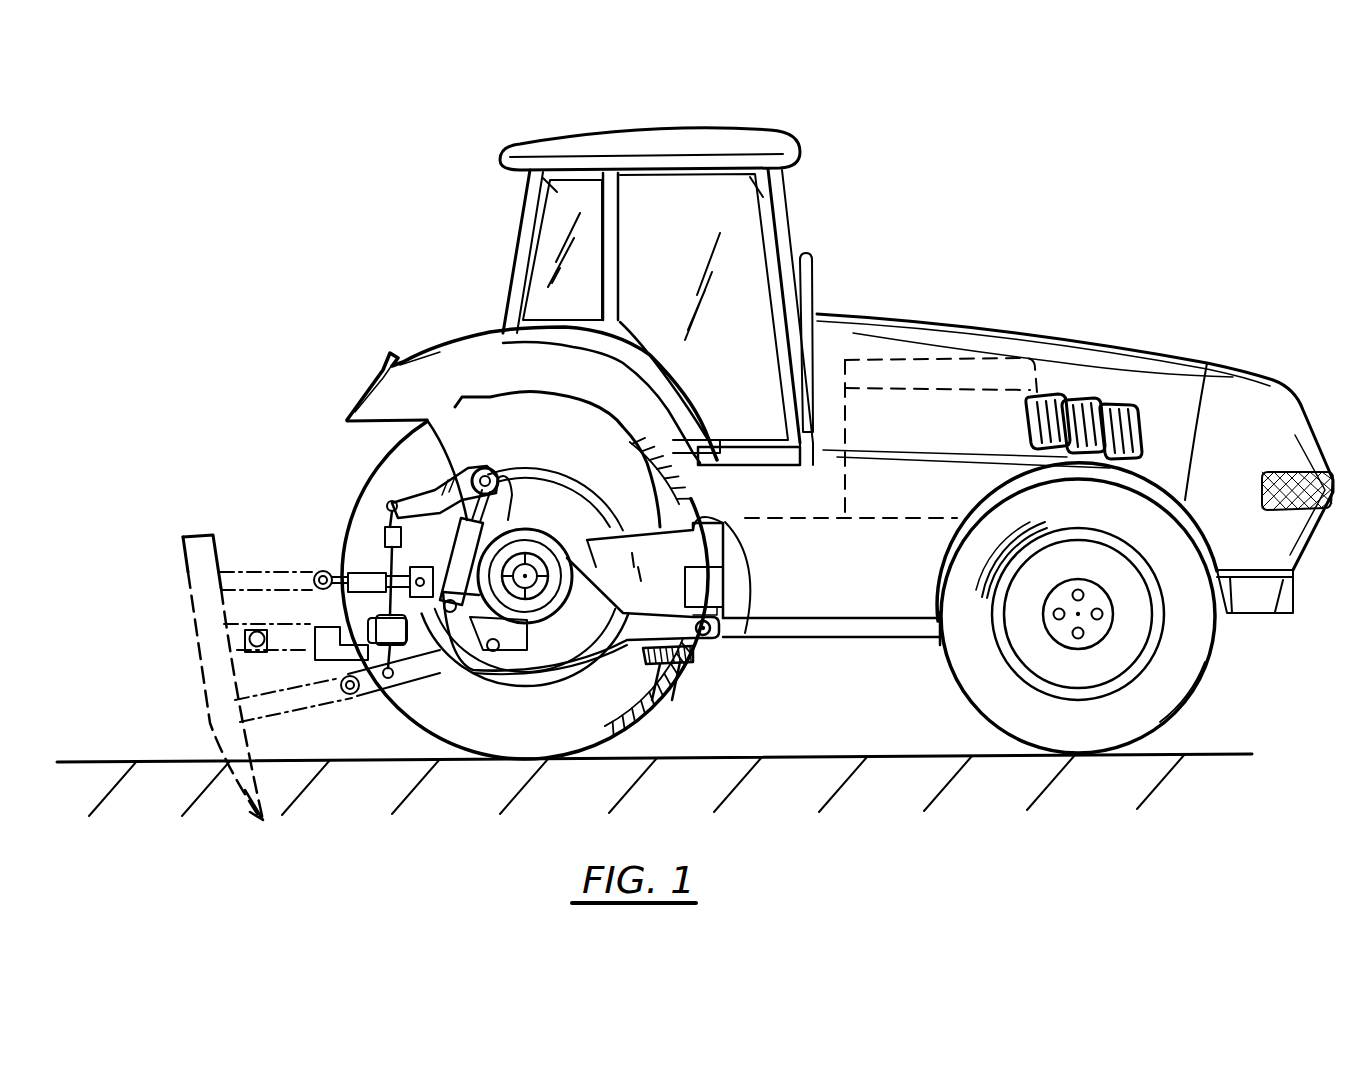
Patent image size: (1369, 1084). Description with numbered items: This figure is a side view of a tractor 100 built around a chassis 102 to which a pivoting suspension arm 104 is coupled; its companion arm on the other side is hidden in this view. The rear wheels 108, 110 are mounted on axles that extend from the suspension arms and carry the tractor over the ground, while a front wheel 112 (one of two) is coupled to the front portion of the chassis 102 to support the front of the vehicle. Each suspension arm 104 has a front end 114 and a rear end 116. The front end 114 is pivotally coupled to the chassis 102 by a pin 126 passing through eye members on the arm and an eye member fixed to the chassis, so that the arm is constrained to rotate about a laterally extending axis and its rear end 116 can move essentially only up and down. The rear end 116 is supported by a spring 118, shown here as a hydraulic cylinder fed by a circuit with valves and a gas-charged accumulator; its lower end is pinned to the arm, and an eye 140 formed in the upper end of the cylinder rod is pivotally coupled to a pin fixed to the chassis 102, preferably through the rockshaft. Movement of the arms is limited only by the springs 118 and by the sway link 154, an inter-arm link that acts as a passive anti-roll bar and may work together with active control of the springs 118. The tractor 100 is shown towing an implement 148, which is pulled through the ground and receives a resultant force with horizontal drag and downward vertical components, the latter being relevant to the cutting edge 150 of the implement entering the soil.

The tractor 100 is at (899, 247).
The chassis 102 is at (741, 608).
The right suspension arm 104 is at (578, 628).
The rear wheel 108 is at (493, 410).
The rear wheel 110 is at (490, 742).
The front wheel 112 is at (1206, 671).
The front end of suspension arm 114 is at (678, 678).
The rear end of suspension arm 116 is at (460, 620).
The spring 118 is at (413, 503).
The pin 126 is at (710, 635).
The eye 140 is at (478, 477).
The implement 148 is at (197, 532).
The blade cutting edge 150 is at (245, 815).
The sway link 154 is at (673, 682).